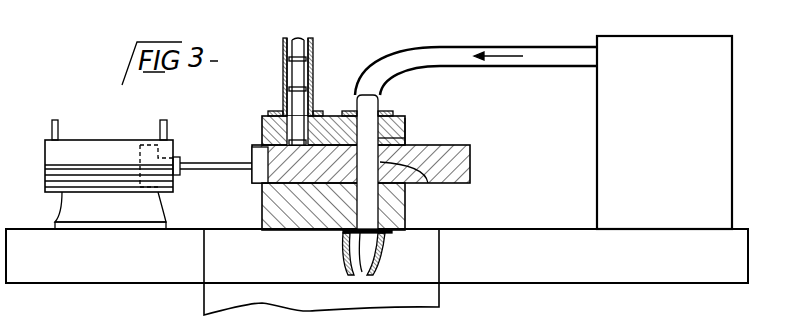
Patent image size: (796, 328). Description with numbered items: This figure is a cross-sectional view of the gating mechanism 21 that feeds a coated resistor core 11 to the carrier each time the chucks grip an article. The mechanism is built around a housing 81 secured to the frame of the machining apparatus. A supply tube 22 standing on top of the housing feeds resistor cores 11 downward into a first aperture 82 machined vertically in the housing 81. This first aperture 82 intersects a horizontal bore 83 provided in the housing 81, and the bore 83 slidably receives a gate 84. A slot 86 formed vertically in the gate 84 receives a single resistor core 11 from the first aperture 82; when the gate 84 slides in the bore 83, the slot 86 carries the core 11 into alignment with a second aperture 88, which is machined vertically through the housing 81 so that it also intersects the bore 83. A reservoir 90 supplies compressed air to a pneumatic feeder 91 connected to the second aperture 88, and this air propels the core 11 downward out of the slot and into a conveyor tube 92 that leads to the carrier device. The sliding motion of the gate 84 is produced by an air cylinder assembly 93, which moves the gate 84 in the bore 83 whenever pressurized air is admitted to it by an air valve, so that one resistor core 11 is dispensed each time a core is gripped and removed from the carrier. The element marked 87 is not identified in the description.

The resistor core 11 is at (295, 97).
The gating mechanism 21 is at (347, 81).
The supply tube 22 is at (310, 57).
The housing 81 is at (308, 222).
The first aperture 82 is at (262, 126).
The horizontal bore 83 is at (380, 140).
The gate 84 is at (470, 154).
The slot 86 is at (428, 184).
The bushing 87 is at (405, 122).
The second aperture 88 is at (380, 215).
The reservoir 90 is at (603, 135).
The pneumatic feeder 91 is at (472, 46).
The conveyor tube 92 is at (363, 258).
The air cylinder assembly 93 is at (77, 139).